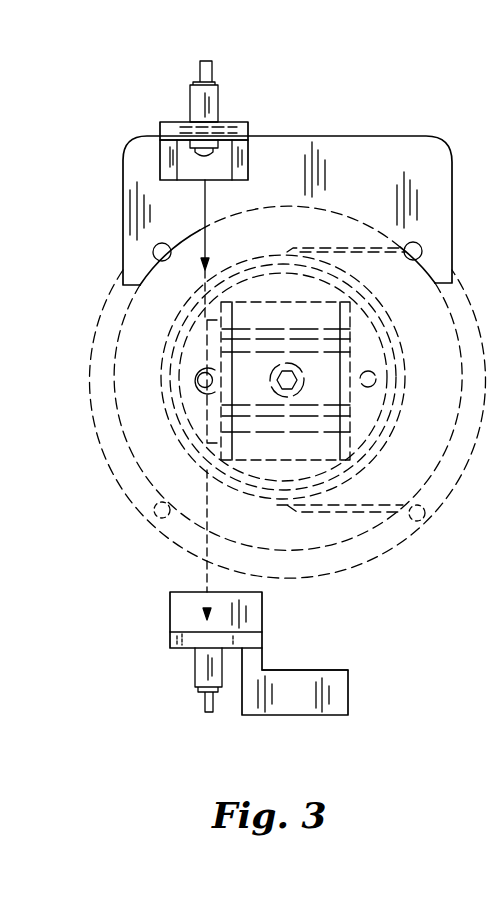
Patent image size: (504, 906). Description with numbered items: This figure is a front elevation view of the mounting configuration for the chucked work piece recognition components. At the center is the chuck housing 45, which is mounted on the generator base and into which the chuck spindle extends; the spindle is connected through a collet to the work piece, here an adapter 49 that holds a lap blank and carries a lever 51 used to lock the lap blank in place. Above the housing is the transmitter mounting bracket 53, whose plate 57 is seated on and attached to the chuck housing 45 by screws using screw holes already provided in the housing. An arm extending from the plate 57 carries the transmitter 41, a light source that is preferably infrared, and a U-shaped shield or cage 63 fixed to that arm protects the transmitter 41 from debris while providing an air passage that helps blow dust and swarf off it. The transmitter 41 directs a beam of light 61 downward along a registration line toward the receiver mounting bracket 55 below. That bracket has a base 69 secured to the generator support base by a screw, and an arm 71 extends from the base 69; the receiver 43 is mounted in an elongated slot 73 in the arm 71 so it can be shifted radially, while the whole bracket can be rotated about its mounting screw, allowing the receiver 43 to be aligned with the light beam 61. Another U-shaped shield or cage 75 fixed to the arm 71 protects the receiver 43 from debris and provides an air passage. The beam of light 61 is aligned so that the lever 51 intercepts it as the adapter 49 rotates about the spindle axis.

The transmitter 41 is at (200, 100).
The receiver 43 is at (202, 670).
The chuck housing 45 is at (473, 325).
The adapter 49 is at (365, 420).
The lever 51 is at (199, 383).
The transmitter mounting bracket 53 is at (298, 117).
The receiver mounting bracket 55 is at (328, 648).
The plate 57 is at (360, 150).
The beam of light 61 is at (205, 208).
The U-shaped shield or cage 63 is at (167, 160).
The base 69 is at (295, 700).
The arm 71 is at (180, 637).
The elongated slot 73 is at (240, 641).
The U-shaped shield or cage 75 is at (180, 612).